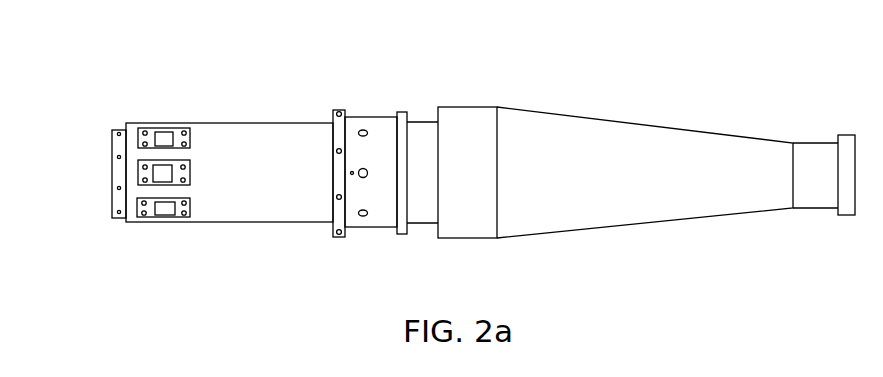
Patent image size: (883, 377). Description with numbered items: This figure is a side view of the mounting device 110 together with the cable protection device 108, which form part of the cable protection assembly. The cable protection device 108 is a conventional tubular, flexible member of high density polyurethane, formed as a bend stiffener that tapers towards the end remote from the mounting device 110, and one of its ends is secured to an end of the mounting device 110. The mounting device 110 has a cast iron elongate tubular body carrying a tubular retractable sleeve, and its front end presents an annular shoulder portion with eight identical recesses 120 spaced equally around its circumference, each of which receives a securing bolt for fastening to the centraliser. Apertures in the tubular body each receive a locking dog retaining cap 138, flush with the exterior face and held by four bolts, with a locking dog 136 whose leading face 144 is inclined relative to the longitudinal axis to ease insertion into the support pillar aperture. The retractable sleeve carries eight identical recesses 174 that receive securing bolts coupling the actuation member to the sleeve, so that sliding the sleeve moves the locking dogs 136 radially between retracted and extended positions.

The cable protection device 108 is at (712, 202).
The mounting device 110 is at (269, 98).
The recesses 120 is at (112, 187).
The locking dog 136 is at (166, 124).
The locking dog retaining cap 138 is at (186, 212).
The leading face 144 is at (169, 227).
The recesses 174 is at (363, 216).